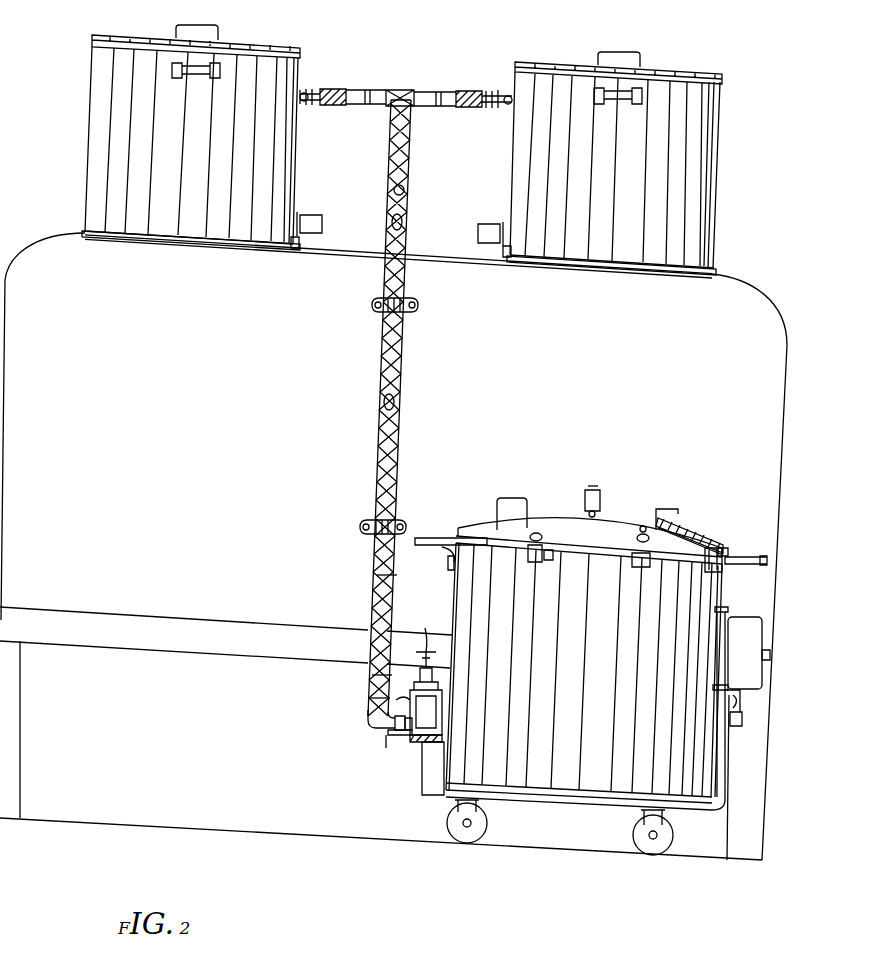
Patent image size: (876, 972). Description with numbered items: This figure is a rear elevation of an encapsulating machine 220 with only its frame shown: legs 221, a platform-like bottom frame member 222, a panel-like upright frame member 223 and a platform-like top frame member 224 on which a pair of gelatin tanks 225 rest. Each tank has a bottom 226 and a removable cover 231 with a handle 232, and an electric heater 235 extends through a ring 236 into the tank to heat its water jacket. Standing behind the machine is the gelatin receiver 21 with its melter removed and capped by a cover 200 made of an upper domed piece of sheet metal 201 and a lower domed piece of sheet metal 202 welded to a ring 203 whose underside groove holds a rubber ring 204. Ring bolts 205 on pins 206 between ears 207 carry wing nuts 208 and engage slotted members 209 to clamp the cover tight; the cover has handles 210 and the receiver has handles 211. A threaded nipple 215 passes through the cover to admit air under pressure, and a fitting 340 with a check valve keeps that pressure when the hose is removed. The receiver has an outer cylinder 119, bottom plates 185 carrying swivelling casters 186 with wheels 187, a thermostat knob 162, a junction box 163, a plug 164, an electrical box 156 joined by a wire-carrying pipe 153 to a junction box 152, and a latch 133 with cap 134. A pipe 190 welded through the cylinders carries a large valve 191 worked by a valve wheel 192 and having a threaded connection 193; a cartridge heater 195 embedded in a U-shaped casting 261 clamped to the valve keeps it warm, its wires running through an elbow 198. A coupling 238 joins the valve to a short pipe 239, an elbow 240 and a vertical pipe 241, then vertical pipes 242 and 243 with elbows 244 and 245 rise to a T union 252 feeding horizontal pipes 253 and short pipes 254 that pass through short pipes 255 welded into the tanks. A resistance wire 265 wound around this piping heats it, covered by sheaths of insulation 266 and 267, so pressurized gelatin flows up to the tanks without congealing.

The gelatin receiver 21 is at (443, 603).
The outer cylinder 119 is at (546, 762).
The latch 133 is at (436, 574).
The latch cap 134 is at (448, 556).
The junction box 152 is at (432, 796).
The pipe 153 is at (602, 800).
The box 156 is at (744, 624).
The knob 162 is at (742, 698).
The junction box 163 is at (736, 716).
The plug 164 is at (764, 658).
The bottom plates 185 is at (690, 800).
The swivelling casters 186 is at (476, 818).
The wheels 187 is at (450, 830).
The pipe 190 is at (443, 720).
The valve 191 is at (424, 655).
The valve wheel 192 is at (424, 646).
The threaded connection 193 is at (396, 724).
The cartridge heater 195 is at (408, 730).
The elbow 198 is at (426, 744).
The cover 200 is at (574, 507).
The upper domed piece of sheet metal 201 is at (684, 520).
The lower domed piece of sheet metal 202 is at (702, 526).
The ring 203 is at (718, 546).
The rubber ring 204 is at (744, 548).
The ring bolts 205 is at (544, 548).
The pins 206 is at (634, 560).
The ears 207 is at (640, 566).
The wing nuts 208 is at (515, 497).
The slotted members 209 is at (536, 533).
The handles 210 is at (498, 508).
The handles 211 is at (440, 538).
The threaded nipple 215 is at (640, 526).
The encapsulating machine 220 is at (758, 266).
The legs 221 is at (20, 789).
The bottom frame member 222 is at (180, 642).
The upright frame member 223 is at (66, 278).
The top frame member 224 is at (337, 250).
The gelatin tanks 225 is at (100, 131).
The bottom 226 is at (146, 238).
The cover 231 is at (146, 28).
The handle 232 is at (214, 22).
The electric heater 235 is at (330, 210).
The ring 236 is at (291, 246).
The coupling 238 is at (392, 736).
The short pipe 239 is at (402, 688).
The elbow 240 is at (368, 724).
The vertical pipe 241 is at (372, 698).
The vertical pipe 242 is at (378, 576).
The vertical pipe 243 is at (406, 155).
The elbow 244 is at (370, 676).
The elbow 245 is at (406, 188).
The T union 252 is at (412, 90).
The horizontal pipes 253 is at (336, 89).
The short pipe 254 is at (309, 88).
The short pipes 255 is at (306, 99).
The U-shaped casting 261 is at (388, 750).
The resistance wire 265 is at (402, 340).
The sheaths of insulation 266 is at (366, 104).
The sheaths of insulation 267 is at (396, 410).
The fitting 340 is at (594, 486).